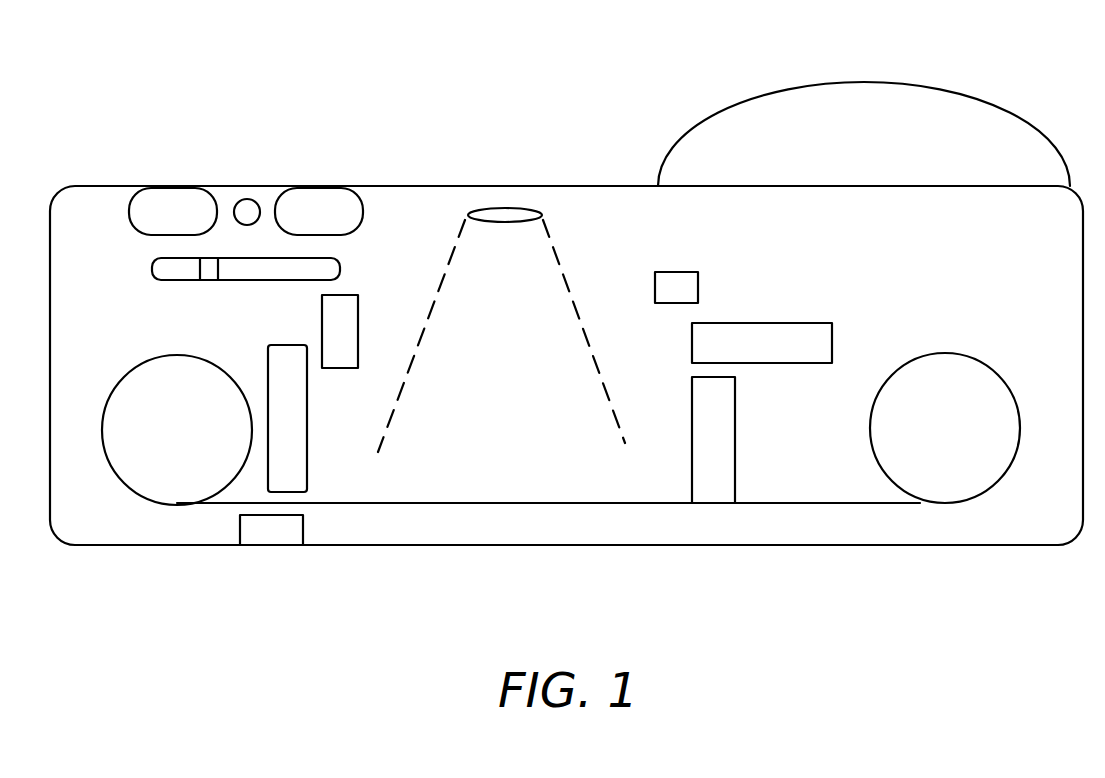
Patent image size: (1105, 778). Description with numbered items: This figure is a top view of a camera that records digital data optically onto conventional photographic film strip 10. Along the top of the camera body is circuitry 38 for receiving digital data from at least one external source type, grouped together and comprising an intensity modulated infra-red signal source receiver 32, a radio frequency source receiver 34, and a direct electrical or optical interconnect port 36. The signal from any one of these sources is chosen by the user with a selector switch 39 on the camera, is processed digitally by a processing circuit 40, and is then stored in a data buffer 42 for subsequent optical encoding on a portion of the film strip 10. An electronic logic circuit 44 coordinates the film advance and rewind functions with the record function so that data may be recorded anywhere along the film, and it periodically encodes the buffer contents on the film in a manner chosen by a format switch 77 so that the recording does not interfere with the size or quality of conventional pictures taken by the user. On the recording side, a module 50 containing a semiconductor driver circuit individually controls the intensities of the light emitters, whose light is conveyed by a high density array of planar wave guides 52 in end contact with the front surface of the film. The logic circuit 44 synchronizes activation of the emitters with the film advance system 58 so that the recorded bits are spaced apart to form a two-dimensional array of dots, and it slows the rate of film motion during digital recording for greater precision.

The film strip 10 is at (812, 503).
The intensity modulated infra-red signal source receiver 32 is at (182, 193).
The radio frequency source receiver 34 is at (248, 200).
The direct electrical or optical interconnect port 36 is at (329, 195).
The circuitry 38 is at (470, 90).
The selector switch 39 is at (172, 280).
The processing circuit 40 is at (358, 332).
The data buffer 42 is at (307, 428).
The electronic logic circuit 44 is at (285, 545).
The module 50 is at (755, 323).
The planar wave guides 52 is at (735, 422).
The film advance system 58 is at (965, 447).
The format switch 77 is at (683, 272).